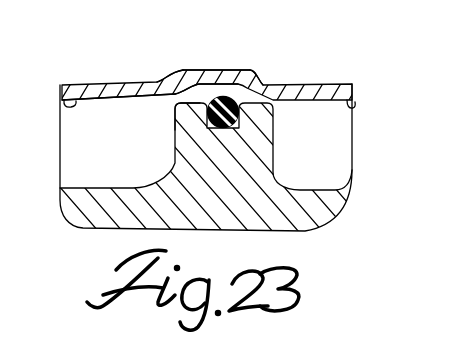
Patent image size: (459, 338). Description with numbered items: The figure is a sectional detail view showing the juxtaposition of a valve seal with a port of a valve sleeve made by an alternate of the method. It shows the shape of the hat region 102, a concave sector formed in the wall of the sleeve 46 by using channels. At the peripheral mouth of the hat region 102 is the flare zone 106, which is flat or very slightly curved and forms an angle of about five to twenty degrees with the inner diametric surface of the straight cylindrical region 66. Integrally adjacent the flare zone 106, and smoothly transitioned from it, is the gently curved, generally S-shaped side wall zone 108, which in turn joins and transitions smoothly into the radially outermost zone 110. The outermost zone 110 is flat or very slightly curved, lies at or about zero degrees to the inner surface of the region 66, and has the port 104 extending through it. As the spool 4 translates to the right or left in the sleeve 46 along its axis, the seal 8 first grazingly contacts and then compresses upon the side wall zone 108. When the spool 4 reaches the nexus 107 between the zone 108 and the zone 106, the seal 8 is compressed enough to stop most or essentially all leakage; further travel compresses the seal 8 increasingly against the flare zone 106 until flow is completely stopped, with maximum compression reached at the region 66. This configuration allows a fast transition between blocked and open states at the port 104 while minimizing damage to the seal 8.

The spool 4 is at (346, 176).
The seal 8 is at (217, 132).
The sleeve 46 is at (317, 86).
The straight cylindrical region 66 is at (72, 100).
The hat region 102 is at (247, 72).
The port 104 is at (220, 71).
The flare zone 106 is at (151, 96).
The nexus 107 is at (172, 93).
The side wall zone 108 is at (176, 110).
The radially outermost zone 110 is at (195, 90).